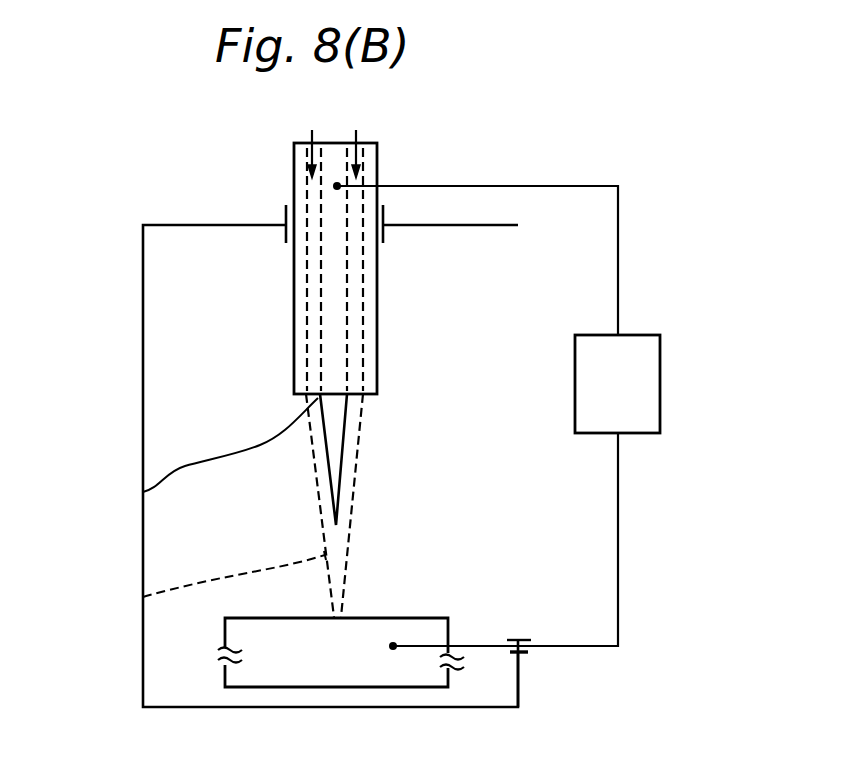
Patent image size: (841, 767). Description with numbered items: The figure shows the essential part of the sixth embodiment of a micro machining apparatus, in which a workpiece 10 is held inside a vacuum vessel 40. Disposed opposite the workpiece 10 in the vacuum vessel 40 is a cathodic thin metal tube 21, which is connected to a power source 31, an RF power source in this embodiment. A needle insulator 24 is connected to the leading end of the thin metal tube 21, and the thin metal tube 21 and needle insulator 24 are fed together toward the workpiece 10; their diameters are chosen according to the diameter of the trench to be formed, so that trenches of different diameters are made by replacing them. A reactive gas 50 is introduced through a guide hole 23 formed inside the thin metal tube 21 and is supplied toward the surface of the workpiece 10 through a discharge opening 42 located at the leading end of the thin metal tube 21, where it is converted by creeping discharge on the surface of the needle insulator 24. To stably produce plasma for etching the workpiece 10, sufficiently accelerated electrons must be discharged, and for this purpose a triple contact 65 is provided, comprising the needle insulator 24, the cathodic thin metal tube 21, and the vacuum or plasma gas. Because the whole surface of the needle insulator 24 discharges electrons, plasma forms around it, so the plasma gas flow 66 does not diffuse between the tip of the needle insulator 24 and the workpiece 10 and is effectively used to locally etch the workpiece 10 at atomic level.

The workpiece 10 is at (278, 670).
The thin metal tube 21 is at (337, 267).
The guide hole 23 is at (358, 320).
The needle insulator 24 is at (337, 455).
The power source 31 is at (652, 418).
The vacuum vessel 40 is at (142, 402).
The discharge opening 42 is at (358, 397).
The reactive gas 50 is at (312, 133).
The triple contact 65 is at (143, 492).
The plasma gas flow 66 is at (143, 597).